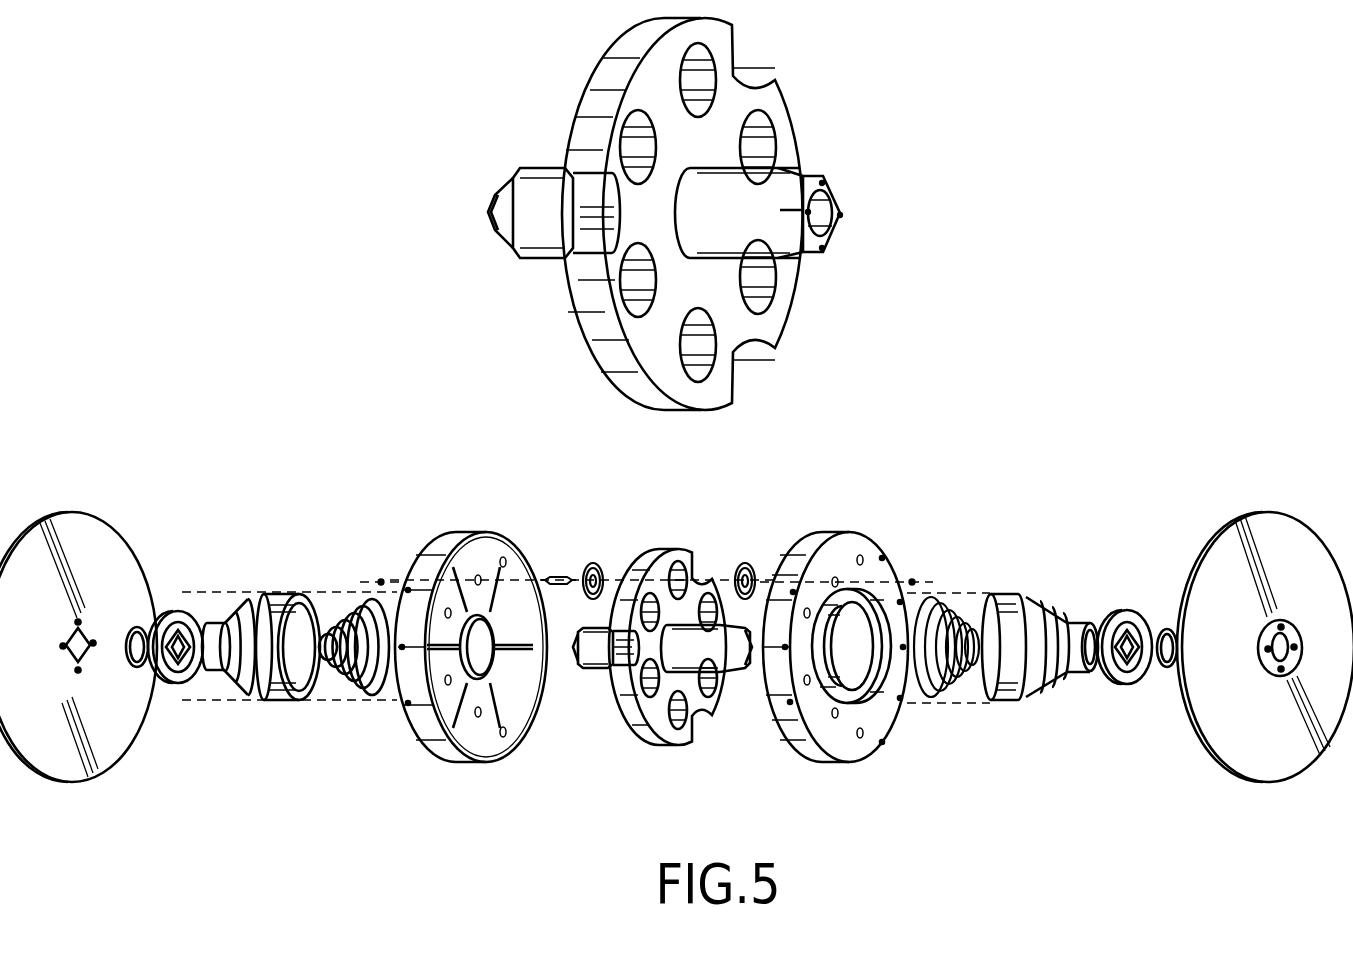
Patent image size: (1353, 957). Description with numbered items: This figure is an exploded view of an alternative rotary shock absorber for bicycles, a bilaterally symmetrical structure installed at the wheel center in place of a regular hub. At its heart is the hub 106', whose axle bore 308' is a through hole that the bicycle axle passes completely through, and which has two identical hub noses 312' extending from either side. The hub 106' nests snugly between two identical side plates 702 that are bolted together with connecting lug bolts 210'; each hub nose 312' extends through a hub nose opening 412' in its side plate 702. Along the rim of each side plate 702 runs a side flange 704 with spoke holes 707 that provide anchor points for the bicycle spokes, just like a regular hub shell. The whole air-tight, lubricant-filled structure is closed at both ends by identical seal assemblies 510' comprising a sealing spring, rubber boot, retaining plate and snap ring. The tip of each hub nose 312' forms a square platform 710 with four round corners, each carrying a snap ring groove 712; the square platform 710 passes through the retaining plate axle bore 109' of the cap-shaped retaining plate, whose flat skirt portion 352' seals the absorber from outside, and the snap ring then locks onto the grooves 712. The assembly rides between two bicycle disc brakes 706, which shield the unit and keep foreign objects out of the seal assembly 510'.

The hub 106' is at (650, 417).
The square platform 710 is at (800, 240).
The axle bore 308' is at (854, 213).
The snap ring groove 712 is at (822, 182).
The bicycle disc brake 706 is at (87, 525).
The spoke hole 707 is at (823, 533).
The flat skirt portion 352' is at (657, 686).
The seal assembly 510' is at (257, 681).
The side plate 702 is at (427, 733).
The connecting lug bolt 210' is at (559, 540).
The hub nose 312' is at (663, 698).
The side flange 704 is at (880, 727).
The hub nose opening 412' is at (826, 702).
The retaining plate axle bore 109' is at (1064, 625).